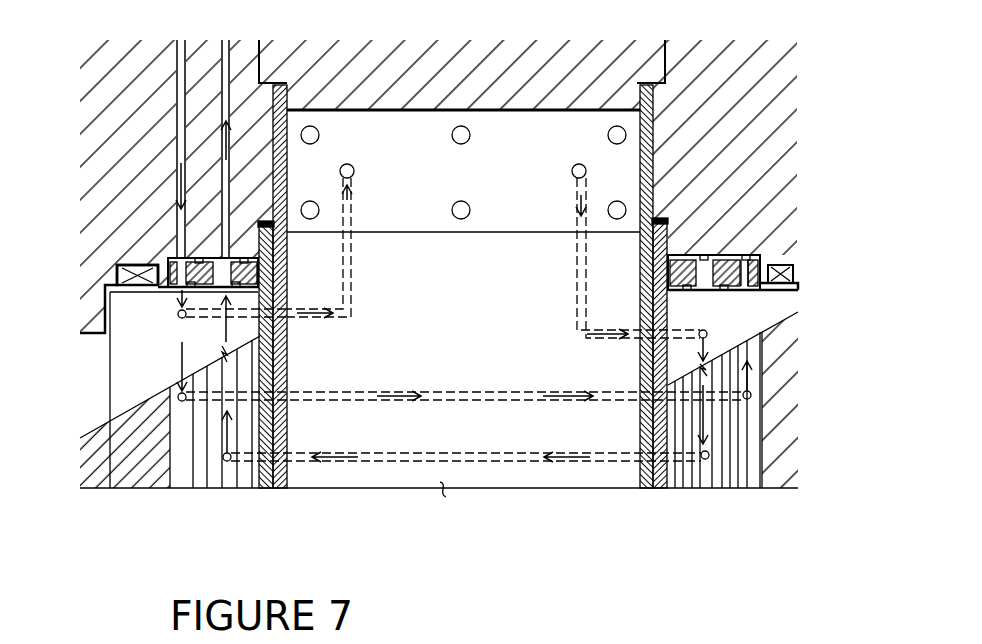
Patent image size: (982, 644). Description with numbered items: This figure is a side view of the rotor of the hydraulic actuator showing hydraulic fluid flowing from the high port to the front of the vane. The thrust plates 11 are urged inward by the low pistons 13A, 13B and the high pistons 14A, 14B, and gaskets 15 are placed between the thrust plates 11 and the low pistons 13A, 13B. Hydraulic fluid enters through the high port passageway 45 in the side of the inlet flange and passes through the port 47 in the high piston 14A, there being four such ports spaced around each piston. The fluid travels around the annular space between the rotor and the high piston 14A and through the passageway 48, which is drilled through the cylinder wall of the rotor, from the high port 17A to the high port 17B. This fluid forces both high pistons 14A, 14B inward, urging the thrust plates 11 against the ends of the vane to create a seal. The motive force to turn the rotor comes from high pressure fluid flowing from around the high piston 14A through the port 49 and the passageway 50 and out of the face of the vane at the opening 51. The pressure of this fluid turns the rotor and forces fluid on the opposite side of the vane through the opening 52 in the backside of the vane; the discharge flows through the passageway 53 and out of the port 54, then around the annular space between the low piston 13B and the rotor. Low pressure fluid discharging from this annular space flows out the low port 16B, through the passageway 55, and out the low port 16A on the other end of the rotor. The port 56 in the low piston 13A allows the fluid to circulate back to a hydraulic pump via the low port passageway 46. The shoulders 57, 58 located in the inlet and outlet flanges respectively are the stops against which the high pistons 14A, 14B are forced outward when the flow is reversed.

The thrust plate 11 is at (283, 432).
The low piston 13A is at (287, 278).
The low piston 13B is at (640, 278).
The high piston 14A is at (178, 300).
The high piston 14B is at (737, 291).
The gasket 15 is at (270, 480).
The low port 16A is at (230, 460).
The low port 16B is at (700, 463).
The high port 17A is at (178, 396).
The high port 17B is at (752, 394).
The high port passageway 45 is at (178, 42).
The low port passageway 46 is at (227, 42).
The port 47 is at (168, 272).
The passageway 48 is at (357, 395).
The port 49 is at (180, 318).
The passageway 50 is at (350, 272).
The opening 51 is at (347, 164).
The opening 52 is at (579, 164).
The passageway 53 is at (577, 262).
The port 54 is at (707, 336).
The passageway 55 is at (490, 453).
The port 56 is at (250, 258).
The shoulder 57 is at (160, 276).
The shoulder 58 is at (768, 266).